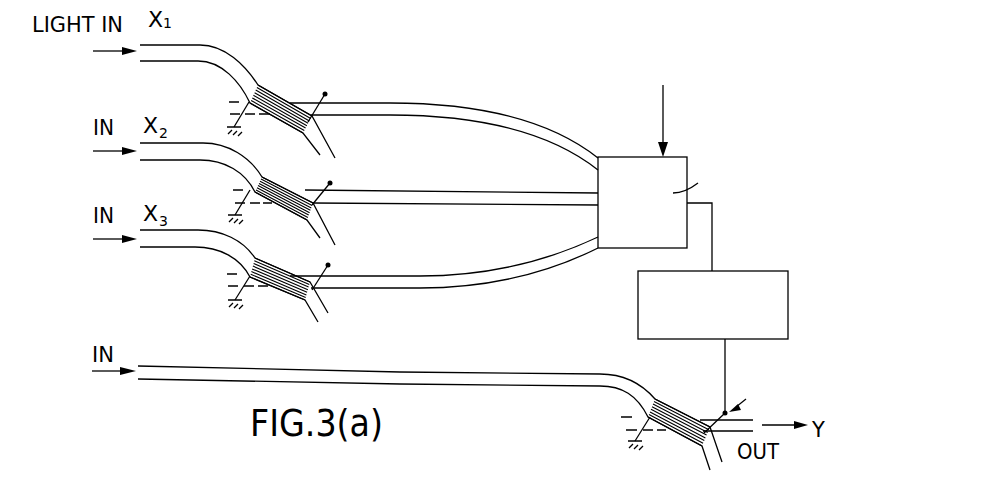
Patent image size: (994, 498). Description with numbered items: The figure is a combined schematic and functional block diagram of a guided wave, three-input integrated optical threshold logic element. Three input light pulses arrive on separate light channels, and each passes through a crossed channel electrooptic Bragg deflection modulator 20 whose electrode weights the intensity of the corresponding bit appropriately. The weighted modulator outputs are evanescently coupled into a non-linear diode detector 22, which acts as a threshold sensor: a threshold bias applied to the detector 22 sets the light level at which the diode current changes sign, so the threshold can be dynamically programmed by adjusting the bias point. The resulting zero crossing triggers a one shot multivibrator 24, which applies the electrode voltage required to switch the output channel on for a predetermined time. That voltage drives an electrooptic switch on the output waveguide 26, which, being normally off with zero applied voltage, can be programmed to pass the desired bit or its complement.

The crossed channel electrooptic Bragg deflection modulator 20 is at (284, 99).
The detector 22 is at (677, 168).
The one shot multivibrator 24 is at (785, 290).
The output waveguide 26 is at (682, 440).